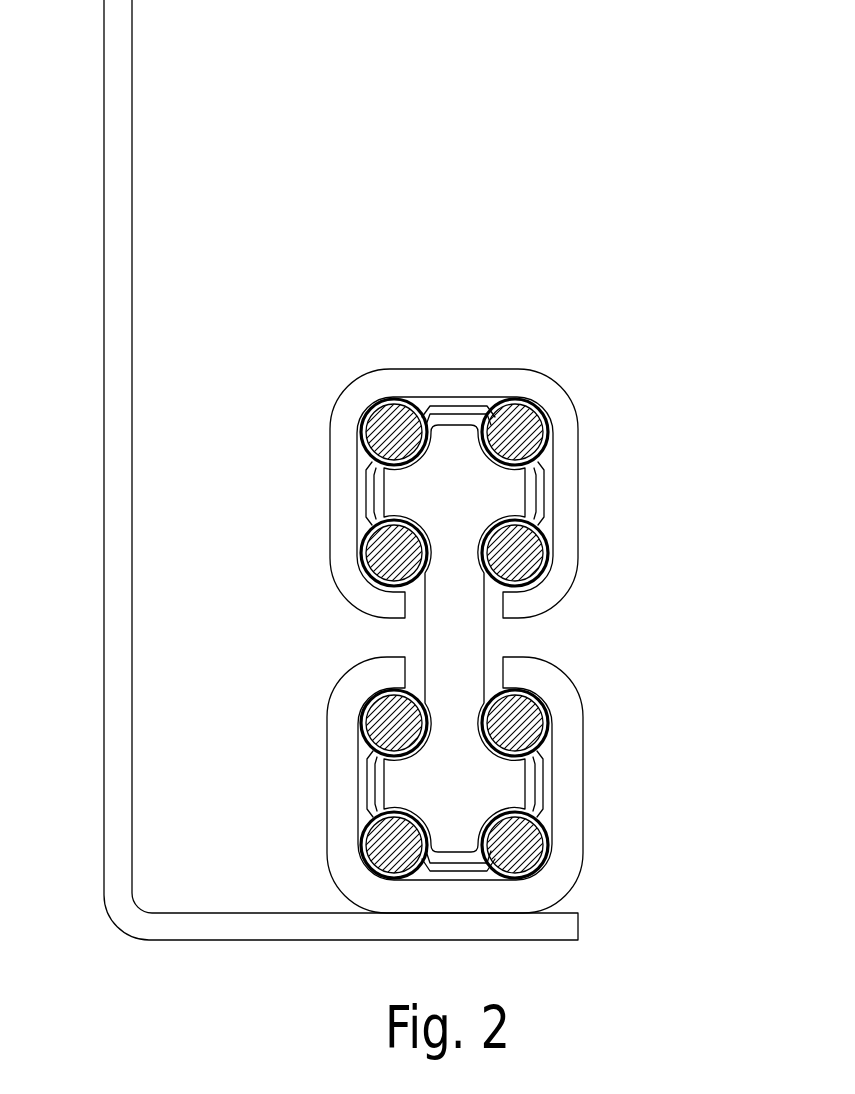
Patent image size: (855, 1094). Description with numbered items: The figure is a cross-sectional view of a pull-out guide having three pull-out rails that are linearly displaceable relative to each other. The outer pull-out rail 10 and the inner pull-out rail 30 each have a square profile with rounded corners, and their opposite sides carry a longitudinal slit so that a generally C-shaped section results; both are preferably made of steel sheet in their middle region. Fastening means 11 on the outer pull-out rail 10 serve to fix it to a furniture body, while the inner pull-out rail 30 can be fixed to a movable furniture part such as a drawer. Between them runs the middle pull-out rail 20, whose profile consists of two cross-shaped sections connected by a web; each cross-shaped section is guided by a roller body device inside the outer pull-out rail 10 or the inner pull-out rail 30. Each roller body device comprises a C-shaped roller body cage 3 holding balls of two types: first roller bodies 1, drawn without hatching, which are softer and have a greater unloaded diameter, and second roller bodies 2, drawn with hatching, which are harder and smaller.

The first roller bodies 1 is at (525, 398).
The second roller bodies 2 is at (522, 420).
The roller body cage 3 is at (447, 408).
The outer pull-out rail 10 is at (568, 782).
The fastening means 11 is at (118, 183).
The middle pull-out rail 20 is at (472, 628).
The inner pull-out rail 30 is at (563, 502).